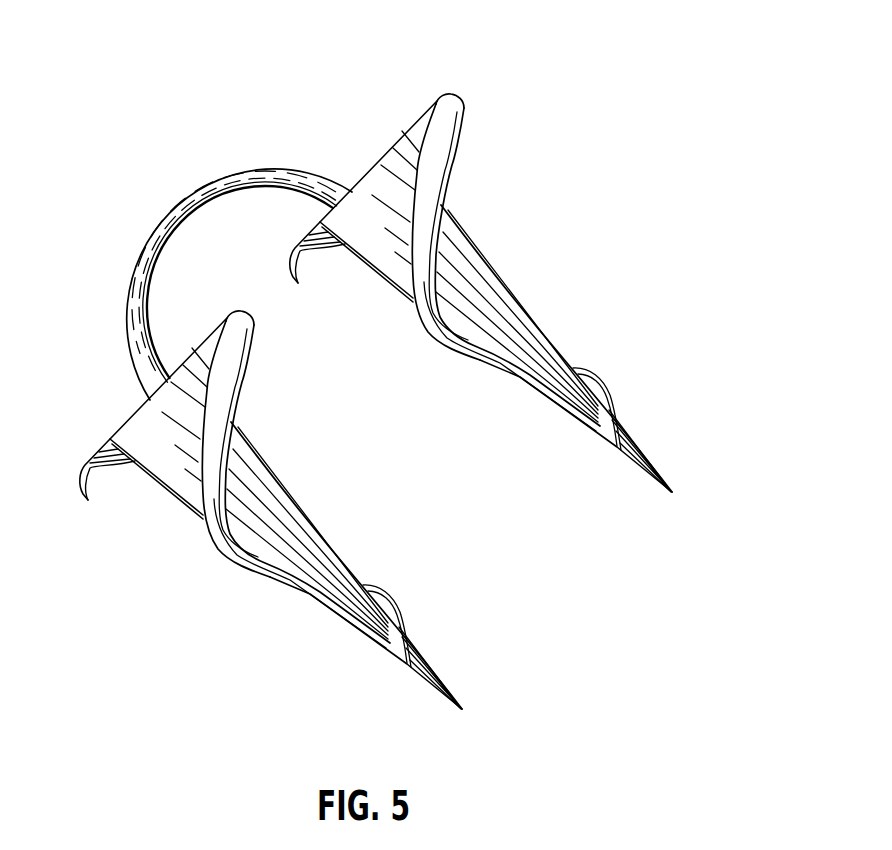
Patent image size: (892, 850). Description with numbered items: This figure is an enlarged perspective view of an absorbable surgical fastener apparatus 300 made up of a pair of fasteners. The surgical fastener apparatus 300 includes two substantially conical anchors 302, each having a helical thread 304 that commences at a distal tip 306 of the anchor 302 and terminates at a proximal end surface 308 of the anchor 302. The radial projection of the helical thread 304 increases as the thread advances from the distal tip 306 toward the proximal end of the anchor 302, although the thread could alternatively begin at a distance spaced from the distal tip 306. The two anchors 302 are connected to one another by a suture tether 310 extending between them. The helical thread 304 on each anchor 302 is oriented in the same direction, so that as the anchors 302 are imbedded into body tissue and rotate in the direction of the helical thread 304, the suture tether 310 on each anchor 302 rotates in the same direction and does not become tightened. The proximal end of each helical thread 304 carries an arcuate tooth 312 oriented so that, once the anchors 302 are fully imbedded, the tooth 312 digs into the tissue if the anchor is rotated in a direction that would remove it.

The surgical fastener apparatus 300 is at (126, 104).
The anchor 302 is at (507, 291).
The helical thread 304 is at (447, 172).
The distal tip 306 is at (658, 451).
The proximal end surface 308 is at (372, 172).
The suture tether 310 is at (227, 163).
The arcuate tooth 312 is at (298, 285).